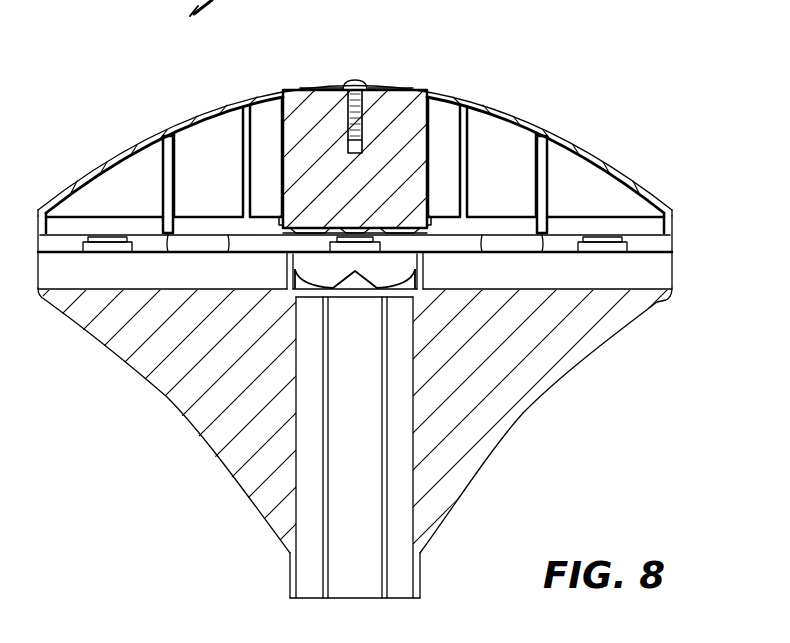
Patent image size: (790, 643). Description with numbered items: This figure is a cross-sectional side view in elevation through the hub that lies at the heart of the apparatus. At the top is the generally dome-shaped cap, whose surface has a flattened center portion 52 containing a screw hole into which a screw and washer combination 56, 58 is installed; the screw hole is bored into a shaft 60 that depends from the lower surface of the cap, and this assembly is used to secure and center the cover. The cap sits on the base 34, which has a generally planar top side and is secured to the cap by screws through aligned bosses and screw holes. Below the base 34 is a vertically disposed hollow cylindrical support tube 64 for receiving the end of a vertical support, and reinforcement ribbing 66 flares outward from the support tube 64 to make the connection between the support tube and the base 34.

The base 34 is at (662, 267).
The flattened center portion 52 is at (415, 88).
The screw 56 is at (357, 78).
The washer 58 is at (380, 88).
The shaft 60 is at (305, 108).
The hollow cylindrical support tube 64 is at (302, 583).
The reinforcement ribbing 66 is at (182, 392).